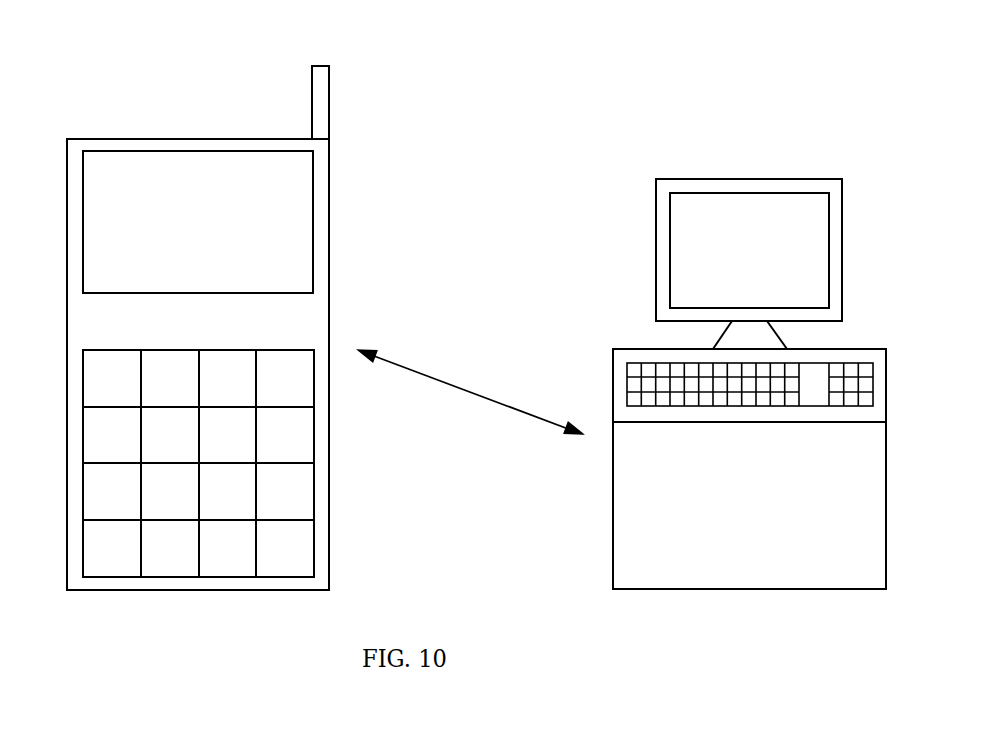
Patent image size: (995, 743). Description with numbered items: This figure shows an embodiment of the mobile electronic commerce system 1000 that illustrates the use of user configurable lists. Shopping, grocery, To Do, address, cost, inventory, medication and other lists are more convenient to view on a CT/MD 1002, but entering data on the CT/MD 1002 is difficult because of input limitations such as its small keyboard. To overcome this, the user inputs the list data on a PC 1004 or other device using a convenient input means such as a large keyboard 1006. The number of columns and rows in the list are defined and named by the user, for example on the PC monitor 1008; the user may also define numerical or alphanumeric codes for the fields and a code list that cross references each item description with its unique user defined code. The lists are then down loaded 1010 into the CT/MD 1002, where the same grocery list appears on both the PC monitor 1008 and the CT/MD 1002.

The mobile electronic commerce system 1000 is at (500, 180).
The CT/MD 1002 is at (343, 278).
The PC 1004 is at (643, 335).
The large keyboard 1006 is at (629, 391).
The PC monitor 1008 is at (857, 265).
The download 1010 is at (442, 392).